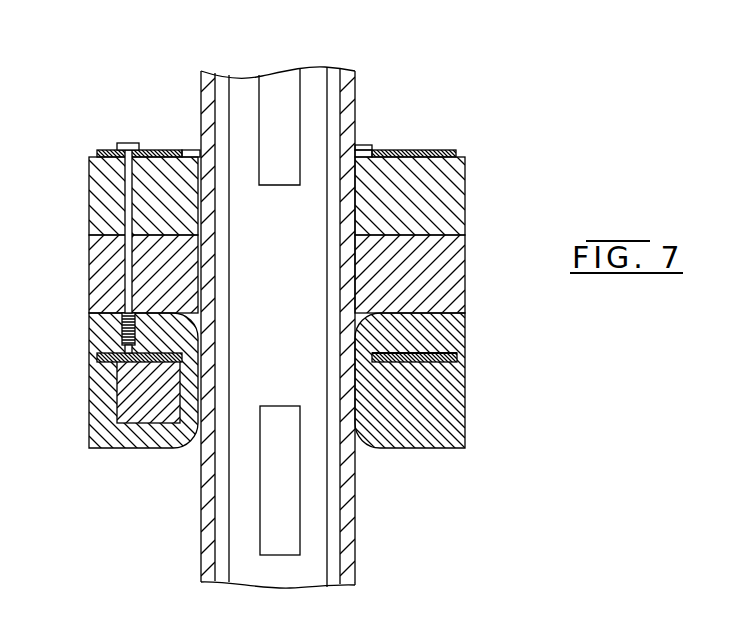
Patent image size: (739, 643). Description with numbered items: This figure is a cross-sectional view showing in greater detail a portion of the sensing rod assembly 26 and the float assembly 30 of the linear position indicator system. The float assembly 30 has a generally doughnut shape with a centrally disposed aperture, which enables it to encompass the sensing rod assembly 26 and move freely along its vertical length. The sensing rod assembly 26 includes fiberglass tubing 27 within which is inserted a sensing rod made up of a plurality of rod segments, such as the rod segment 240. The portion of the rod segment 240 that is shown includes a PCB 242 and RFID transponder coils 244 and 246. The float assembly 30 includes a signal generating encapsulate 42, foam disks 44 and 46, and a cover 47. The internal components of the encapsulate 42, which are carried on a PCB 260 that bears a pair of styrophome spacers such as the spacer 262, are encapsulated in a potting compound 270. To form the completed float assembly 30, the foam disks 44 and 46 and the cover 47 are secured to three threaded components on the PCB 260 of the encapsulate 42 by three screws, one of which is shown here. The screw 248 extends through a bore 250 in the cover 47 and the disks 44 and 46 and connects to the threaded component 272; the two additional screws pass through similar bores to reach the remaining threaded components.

The rod segment 240 is at (282, 307).
The RFID transponder coil 244 is at (283, 88).
The PCB 242 is at (315, 100).
The RFID transponder coil 246 is at (267, 497).
The fiberglass tubing 27 is at (353, 517).
The sensing rod assembly 26 is at (116, 302).
The float assembly 30 is at (455, 306).
The foam disk 46 is at (100, 195).
The foam disk 44 is at (98, 270).
The signal generating encapsulate 42 is at (115, 382).
The cover 47 is at (97, 152).
The screw 248 is at (133, 143).
The bore 250 is at (122, 214).
The threaded component 272 is at (98, 322).
The styrophome spacer 262 is at (140, 403).
The PCB 260 is at (457, 353).
The potting compound 270 is at (455, 383).